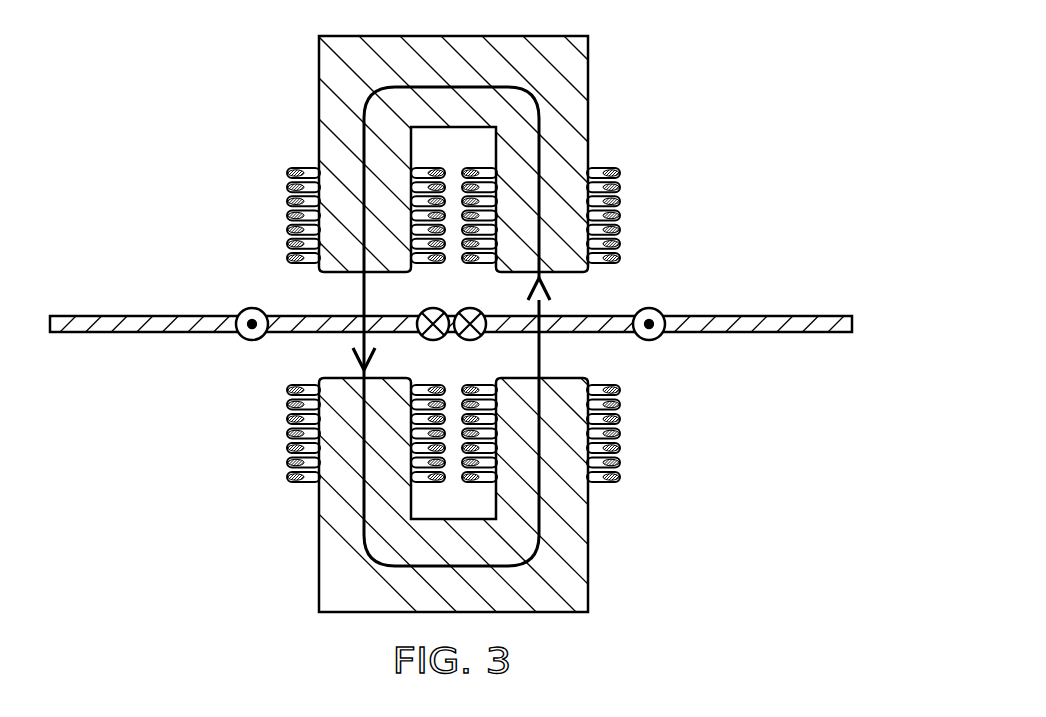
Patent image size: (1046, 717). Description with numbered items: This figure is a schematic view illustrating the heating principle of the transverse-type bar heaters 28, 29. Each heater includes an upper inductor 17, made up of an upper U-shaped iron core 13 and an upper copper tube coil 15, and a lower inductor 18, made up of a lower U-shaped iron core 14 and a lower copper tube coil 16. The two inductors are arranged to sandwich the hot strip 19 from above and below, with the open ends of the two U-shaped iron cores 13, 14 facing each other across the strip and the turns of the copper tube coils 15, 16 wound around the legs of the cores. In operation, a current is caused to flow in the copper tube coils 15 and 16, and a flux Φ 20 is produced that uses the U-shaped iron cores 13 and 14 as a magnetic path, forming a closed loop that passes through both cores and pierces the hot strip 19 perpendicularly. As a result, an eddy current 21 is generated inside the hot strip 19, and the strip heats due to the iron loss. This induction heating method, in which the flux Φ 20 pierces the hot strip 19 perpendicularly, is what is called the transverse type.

The upper U-shaped iron core 13 is at (567, 106).
The lower U-shaped iron core 14 is at (563, 505).
The upper copper tube coil 15 is at (605, 187).
The lower copper tube coil 16 is at (623, 432).
The upper inductor 17 is at (420, 154).
The lower inductor 18 is at (578, 495).
The hot strip 19 is at (787, 316).
The flux Φ 20 is at (362, 125).
The eddy current 21 is at (254, 340).
The transverse-type bar heater 28 is at (487, 306).
The transverse-type bar heater 29 is at (487, 306).